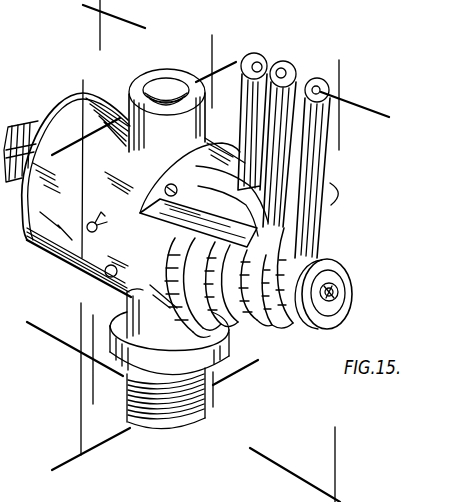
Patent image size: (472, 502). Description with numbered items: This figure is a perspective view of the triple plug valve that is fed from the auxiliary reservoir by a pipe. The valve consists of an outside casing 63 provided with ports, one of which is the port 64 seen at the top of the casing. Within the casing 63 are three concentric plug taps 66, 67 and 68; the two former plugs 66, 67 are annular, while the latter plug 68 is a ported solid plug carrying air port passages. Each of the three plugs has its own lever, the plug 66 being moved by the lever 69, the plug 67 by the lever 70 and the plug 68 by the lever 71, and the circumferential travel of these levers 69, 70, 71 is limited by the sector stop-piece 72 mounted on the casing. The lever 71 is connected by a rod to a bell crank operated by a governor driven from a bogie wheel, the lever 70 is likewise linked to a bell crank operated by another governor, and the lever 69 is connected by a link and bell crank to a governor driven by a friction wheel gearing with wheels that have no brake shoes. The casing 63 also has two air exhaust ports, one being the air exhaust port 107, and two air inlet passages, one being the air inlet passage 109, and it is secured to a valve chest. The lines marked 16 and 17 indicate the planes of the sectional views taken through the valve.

The section line 16- 16 is at (146, 261).
The section line 17- 17 is at (208, 251).
The outside casing 63 is at (124, 261).
The port 64 is at (157, 78).
The plug tap 66 is at (232, 330).
The plug tap 67 is at (276, 332).
The plug tap 68 is at (302, 245).
The lever 69 is at (241, 118).
The lever 70 is at (288, 80).
The lever 71 is at (322, 158).
The sector stop-piece 72 is at (204, 195).
The air exhaust port 107 is at (98, 282).
The air inlet passage 109 is at (87, 220).